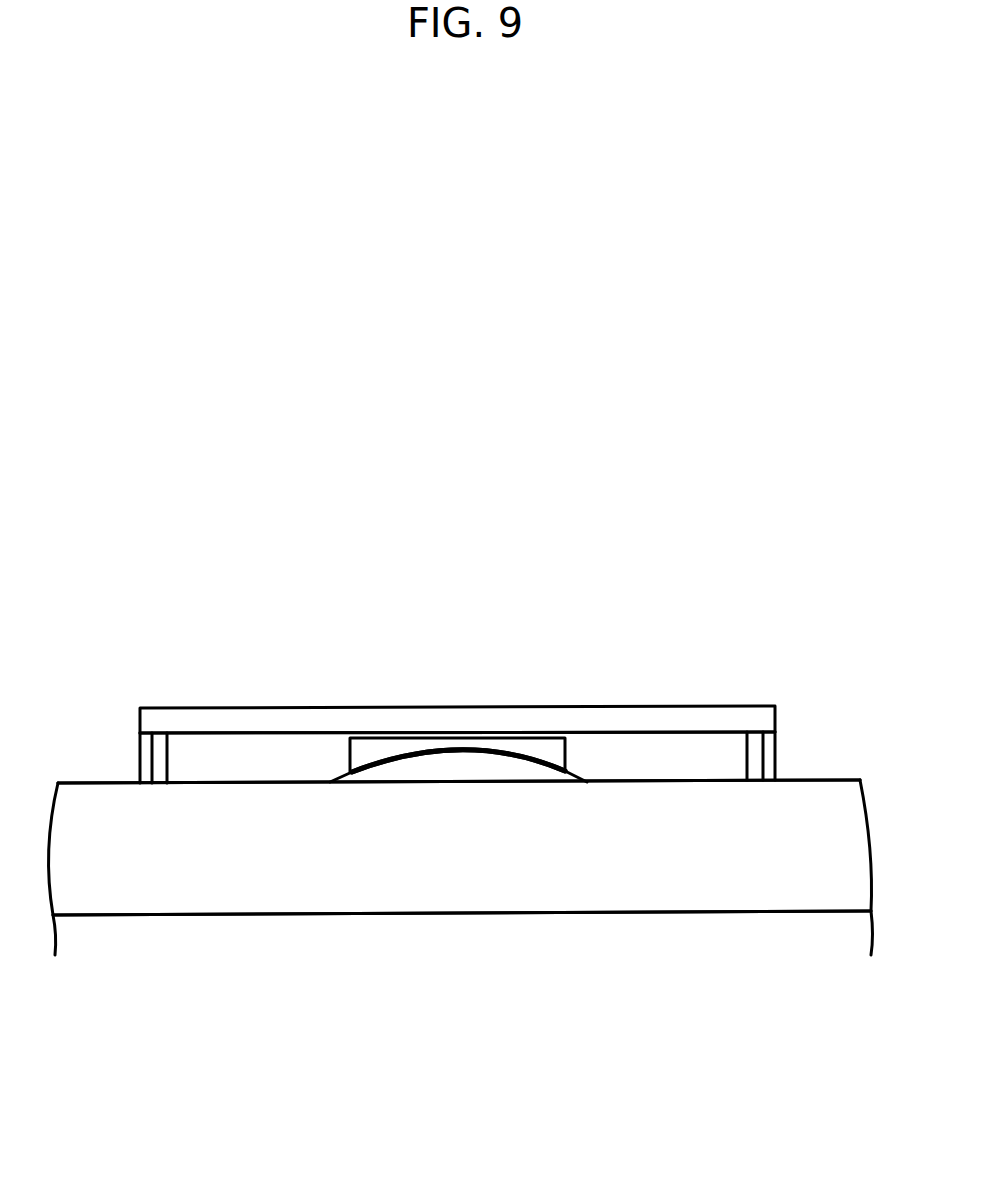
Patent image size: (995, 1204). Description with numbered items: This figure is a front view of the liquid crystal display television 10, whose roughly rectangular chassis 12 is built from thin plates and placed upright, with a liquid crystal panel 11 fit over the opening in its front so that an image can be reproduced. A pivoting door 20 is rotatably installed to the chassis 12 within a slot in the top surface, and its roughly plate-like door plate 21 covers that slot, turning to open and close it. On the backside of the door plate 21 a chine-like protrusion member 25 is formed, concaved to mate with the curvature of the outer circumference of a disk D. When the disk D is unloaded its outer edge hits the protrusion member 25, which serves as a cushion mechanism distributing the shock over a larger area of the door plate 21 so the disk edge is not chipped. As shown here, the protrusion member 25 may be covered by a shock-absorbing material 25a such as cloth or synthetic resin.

The liquid crystal display television 10 is at (817, 793).
The liquid crystal panel 11 is at (768, 933).
The chassis 12 is at (87, 798).
The pivoting door 20 is at (648, 720).
The door plate 21 is at (246, 757).
The protrusion member 25 is at (470, 750).
The curved sensing surface of sensor element 25a is at (532, 750).
The disk D is at (417, 772).